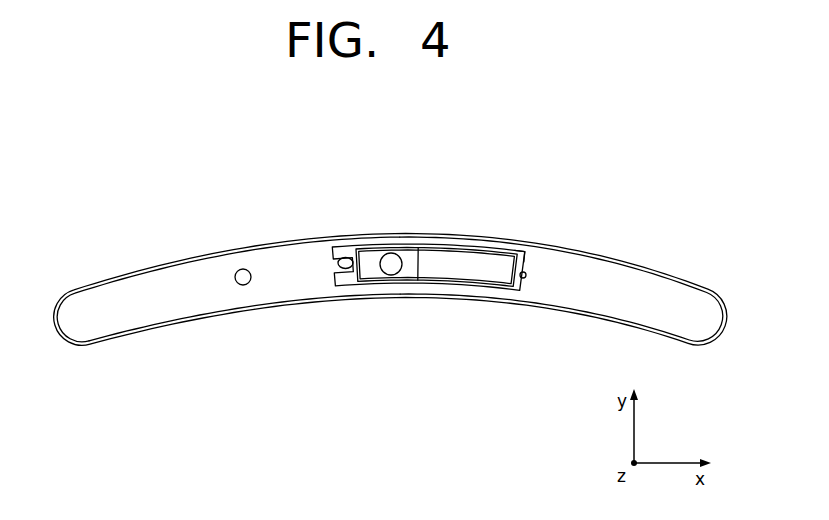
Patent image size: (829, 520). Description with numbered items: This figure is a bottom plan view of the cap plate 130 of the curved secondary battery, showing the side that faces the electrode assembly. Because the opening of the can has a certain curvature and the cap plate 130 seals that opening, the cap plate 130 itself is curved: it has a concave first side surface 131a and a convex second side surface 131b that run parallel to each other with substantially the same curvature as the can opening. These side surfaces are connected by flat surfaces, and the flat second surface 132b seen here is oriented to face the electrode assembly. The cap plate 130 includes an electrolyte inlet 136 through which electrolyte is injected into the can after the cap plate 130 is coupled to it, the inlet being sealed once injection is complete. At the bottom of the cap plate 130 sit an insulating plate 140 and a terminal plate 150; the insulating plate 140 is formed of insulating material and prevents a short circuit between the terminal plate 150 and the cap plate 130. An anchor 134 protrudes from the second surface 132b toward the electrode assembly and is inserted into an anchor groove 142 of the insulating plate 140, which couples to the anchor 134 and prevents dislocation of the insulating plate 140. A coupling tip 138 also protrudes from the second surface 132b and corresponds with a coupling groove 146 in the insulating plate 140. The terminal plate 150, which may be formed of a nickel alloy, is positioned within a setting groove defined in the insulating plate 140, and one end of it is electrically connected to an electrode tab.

The cap plate 130 is at (641, 206).
The first side surface 131a is at (133, 337).
The second side surface 131b is at (142, 270).
The second surface 132b is at (663, 293).
The anchor 134 is at (524, 278).
The electrolyte inlet 136 is at (245, 285).
The coupling tip 138 is at (333, 257).
The insulating plate 140 is at (488, 252).
The anchor groove 142 is at (522, 257).
The coupling groove 146 is at (346, 269).
The terminal plate 150 is at (374, 256).